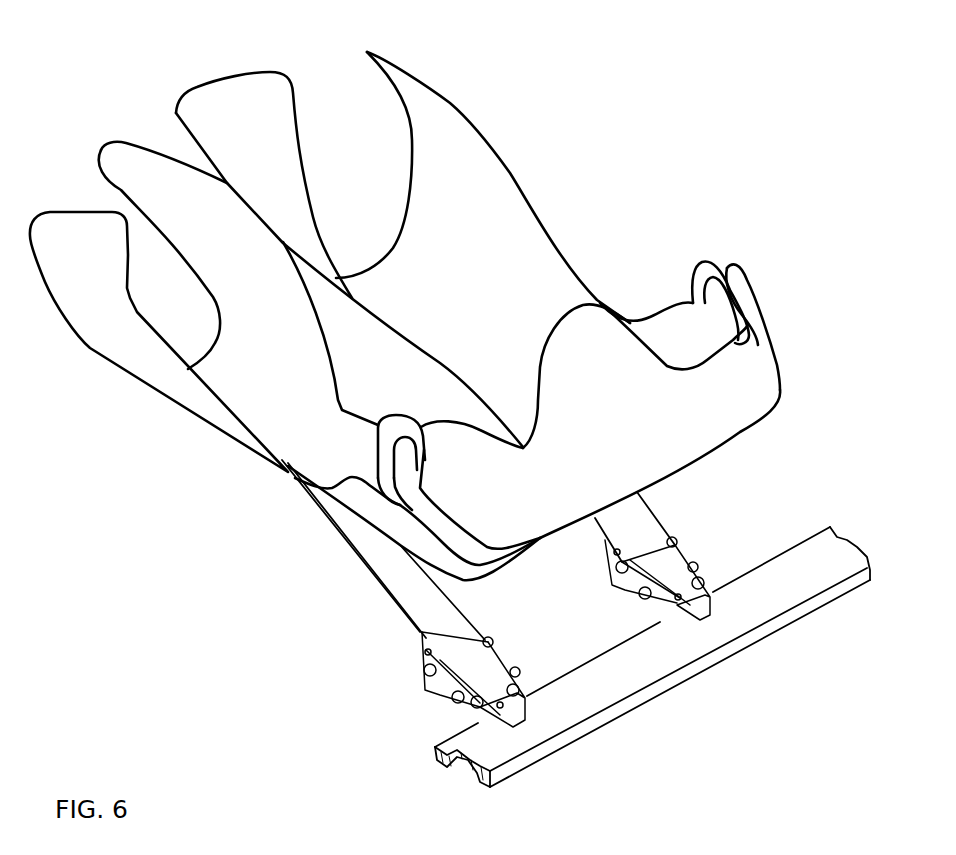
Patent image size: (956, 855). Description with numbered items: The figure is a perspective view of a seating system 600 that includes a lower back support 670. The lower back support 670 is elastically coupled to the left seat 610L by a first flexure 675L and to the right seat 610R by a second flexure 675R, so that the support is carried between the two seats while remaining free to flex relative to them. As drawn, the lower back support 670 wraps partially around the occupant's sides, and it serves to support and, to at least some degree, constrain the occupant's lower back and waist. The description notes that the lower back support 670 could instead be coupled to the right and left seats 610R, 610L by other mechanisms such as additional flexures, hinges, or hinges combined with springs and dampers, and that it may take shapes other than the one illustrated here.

The seating system 600 is at (640, 42).
The left seat 610L is at (203, 423).
The right seat 610R is at (510, 173).
The lower back support 670 is at (692, 462).
The first flexure 675L is at (380, 462).
The second flexure 675R is at (707, 260).